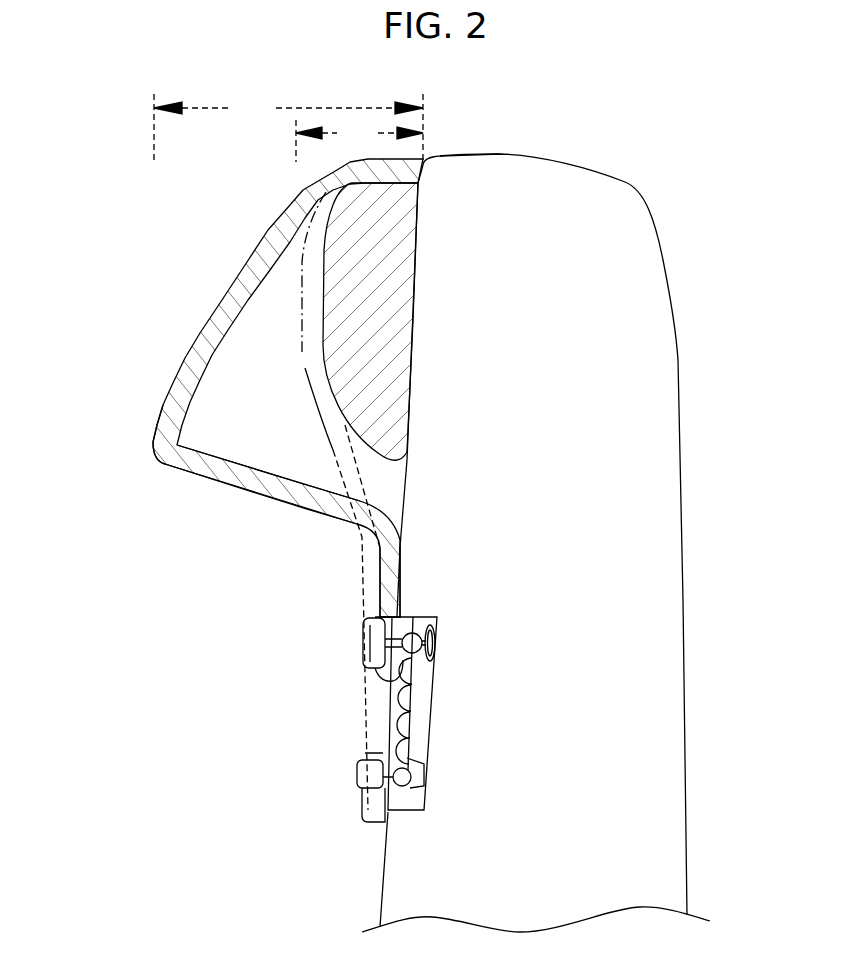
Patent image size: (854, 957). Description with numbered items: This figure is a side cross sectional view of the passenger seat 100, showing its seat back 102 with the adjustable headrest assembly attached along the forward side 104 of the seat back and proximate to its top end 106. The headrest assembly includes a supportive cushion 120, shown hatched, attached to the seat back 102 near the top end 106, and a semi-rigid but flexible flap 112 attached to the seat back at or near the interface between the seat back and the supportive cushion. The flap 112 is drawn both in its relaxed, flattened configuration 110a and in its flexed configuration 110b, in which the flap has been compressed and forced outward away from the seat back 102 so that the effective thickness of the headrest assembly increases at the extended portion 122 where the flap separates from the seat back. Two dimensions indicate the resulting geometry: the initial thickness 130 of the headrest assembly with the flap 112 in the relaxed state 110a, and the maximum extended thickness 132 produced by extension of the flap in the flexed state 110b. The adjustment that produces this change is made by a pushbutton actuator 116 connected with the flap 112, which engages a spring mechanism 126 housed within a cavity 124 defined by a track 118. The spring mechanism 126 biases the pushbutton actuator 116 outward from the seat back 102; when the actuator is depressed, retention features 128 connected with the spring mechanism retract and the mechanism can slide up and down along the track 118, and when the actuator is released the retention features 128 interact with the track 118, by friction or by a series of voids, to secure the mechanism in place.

The seat 100 is at (283, 468).
The seat back 102 is at (550, 509).
The forward side 104 is at (444, 881).
The top end 106 is at (532, 159).
The relaxed configuration 110a is at (340, 561).
The flexed configuration 110b is at (200, 522).
The flap 112 is at (180, 372).
The pushbutton actuator 116 is at (365, 645).
The track 118 is at (400, 803).
The supportive cushion 120 is at (388, 284).
The extended portion 122 is at (150, 448).
The cavity 124 is at (422, 716).
The spring mechanism 126 is at (433, 658).
The retention features 128 is at (415, 633).
The initial thickness 130 is at (359, 141).
The maximum extended thickness 132 is at (288, 128).